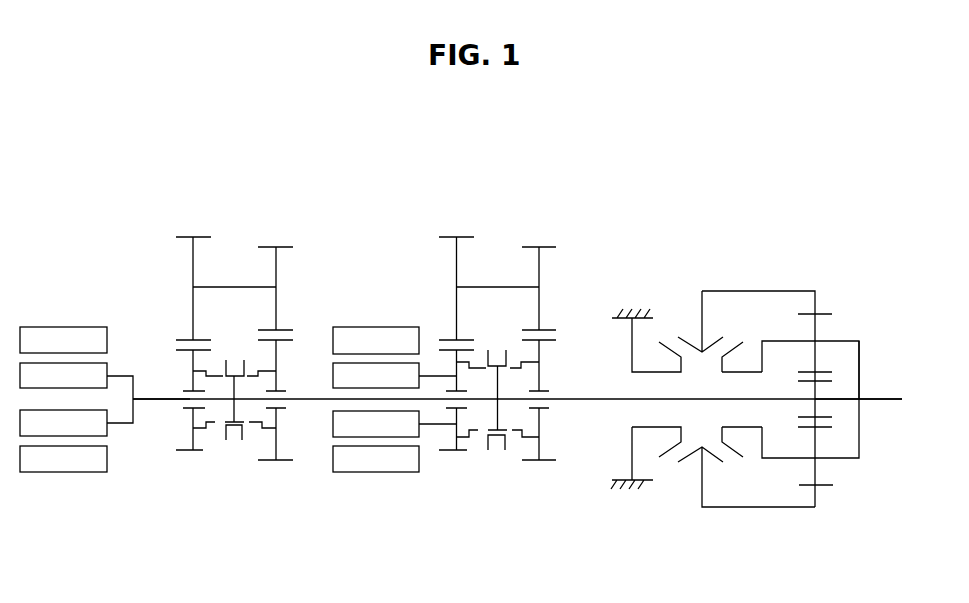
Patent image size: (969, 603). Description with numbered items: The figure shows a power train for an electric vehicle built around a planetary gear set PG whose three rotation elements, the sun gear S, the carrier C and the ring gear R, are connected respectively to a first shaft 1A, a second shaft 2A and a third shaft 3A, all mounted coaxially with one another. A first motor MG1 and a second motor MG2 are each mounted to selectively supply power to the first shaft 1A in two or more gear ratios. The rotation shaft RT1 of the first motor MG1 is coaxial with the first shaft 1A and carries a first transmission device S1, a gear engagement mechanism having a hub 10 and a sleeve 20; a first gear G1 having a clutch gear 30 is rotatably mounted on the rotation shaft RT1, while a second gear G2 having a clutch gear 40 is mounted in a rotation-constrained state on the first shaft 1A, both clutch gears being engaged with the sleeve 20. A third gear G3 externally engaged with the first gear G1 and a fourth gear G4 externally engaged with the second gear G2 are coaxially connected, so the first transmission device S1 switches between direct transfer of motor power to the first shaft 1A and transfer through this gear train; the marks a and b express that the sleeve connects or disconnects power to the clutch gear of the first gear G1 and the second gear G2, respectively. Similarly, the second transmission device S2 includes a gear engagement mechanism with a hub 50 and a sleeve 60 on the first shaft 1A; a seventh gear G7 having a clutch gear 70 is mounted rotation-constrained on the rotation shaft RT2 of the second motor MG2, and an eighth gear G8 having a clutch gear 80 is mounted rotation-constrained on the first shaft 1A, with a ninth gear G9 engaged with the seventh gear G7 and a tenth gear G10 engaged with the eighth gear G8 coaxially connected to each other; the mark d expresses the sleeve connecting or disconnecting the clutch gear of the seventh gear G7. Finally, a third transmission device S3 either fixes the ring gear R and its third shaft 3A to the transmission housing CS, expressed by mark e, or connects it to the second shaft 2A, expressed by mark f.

The hub 10 is at (233, 408).
The sleeve 20 is at (241, 360).
The clutch gear 30 is at (216, 423).
The clutch gear 40 is at (250, 422).
The hub 50 is at (498, 413).
The sleeve 60 is at (492, 442).
The clutch gear 70 is at (484, 366).
The clutch gear 80 is at (514, 367).
The first motor MG1 is at (76, 386).
The second motor MG2 is at (395, 386).
The rotation shaft of the first motor RT1 is at (163, 396).
The rotation shaft of the second motor RT2 is at (437, 425).
The first gear G1 is at (180, 452).
The second gear G2 is at (283, 462).
The third gear G3 is at (183, 237).
The fourth gear G4 is at (265, 247).
The seventh gear G7 is at (446, 452).
The eighth gear G8 is at (550, 462).
The ninth gear G9 is at (446, 237).
The tenth gear G10 is at (528, 247).
The first transmission device S1 is at (234, 450).
The second transmission device S2 is at (505, 457).
The third transmission device S3 is at (691, 330).
The sleeve connection state a is at (202, 440).
The sleeve connection state b is at (262, 440).
The sleeve connection state d is at (475, 443).
The connection state e is at (661, 331).
The connection state f is at (736, 331).
The carrier C is at (527, 450).
The transmission housing CS is at (645, 490).
The third shaft 3A is at (792, 291).
The second shaft 2A is at (860, 341).
The first shaft 1A is at (827, 400).
The ring gear R is at (828, 313).
The sun gear S is at (831, 381).
The planetary gear set PG is at (832, 500).